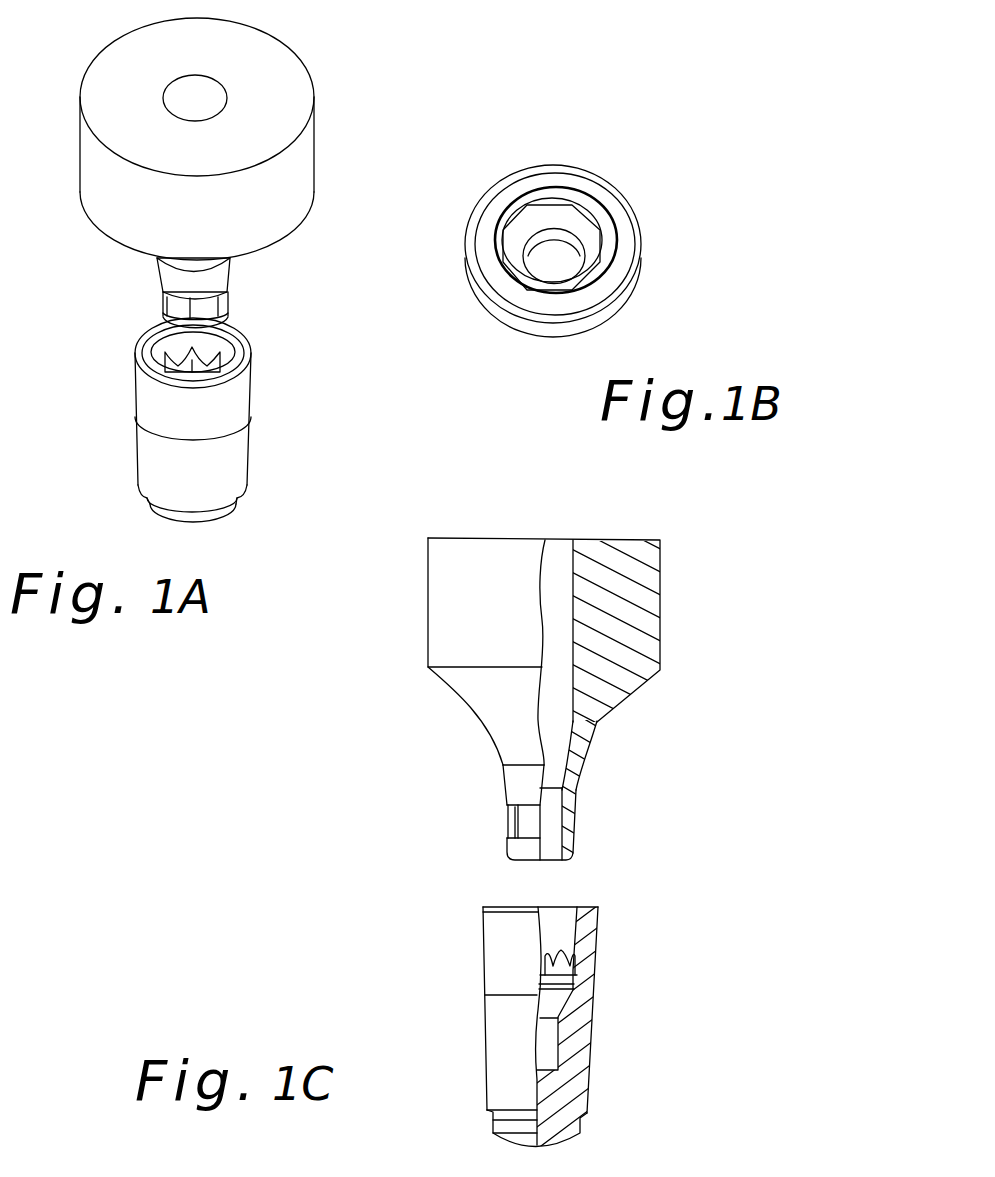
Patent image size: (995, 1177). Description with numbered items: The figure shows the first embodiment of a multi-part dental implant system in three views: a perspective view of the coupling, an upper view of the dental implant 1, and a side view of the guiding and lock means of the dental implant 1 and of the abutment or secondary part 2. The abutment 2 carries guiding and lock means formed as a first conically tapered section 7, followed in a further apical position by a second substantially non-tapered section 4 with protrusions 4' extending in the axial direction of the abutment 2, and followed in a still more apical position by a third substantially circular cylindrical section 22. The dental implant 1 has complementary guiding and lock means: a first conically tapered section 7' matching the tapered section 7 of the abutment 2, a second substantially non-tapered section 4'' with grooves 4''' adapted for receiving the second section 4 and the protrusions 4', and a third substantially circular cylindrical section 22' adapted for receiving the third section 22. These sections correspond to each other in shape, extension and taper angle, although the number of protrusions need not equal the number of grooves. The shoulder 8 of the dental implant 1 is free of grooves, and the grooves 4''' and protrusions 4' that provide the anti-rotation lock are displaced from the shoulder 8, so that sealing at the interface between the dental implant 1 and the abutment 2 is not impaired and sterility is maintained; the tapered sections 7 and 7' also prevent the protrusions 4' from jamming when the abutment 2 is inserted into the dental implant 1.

In FIG. 1A, the dental implant 1 is at (242, 462).
In FIG. 1B, the dental implant 1 is at (642, 250).
In FIG. 1C, the dental implant 1 is at (590, 1073).
In FIG. 1A, the abutment or secondary part 2 is at (282, 73).
In FIG. 1C, the abutment or secondary part 2 is at (643, 596).
In FIG. 1A, the second substantially non-tapered section 4 is at (196, 299).
In FIG. 1C, the second substantially non-tapered section 4 is at (618, 786).
In FIG. 1A, the protrusions 4' is at (249, 318).
In FIG. 1C, the protrusions 4' is at (472, 804).
In FIG. 1C, the second substantially non-tapered section 4'' is at (490, 977).
In FIG. 1B, the grooves 4''' is at (586, 194).
In FIG. 1C, the grooves 4''' is at (619, 959).
In FIG. 1A, the first conically tapered section 7 is at (236, 272).
In FIG. 1C, the first conically tapered section 7 is at (589, 786).
In FIG. 1A, the first conically tapered section 7' is at (248, 373).
In FIG. 1B, the first conically tapered section 7' is at (597, 224).
In FIG. 1C, the shoulder 8 is at (593, 909).
In FIG. 1C, the third substantially circular cylindrical section 22 is at (596, 857).
In FIG. 1C, the third substantially circular cylindrical section 22' is at (617, 1006).